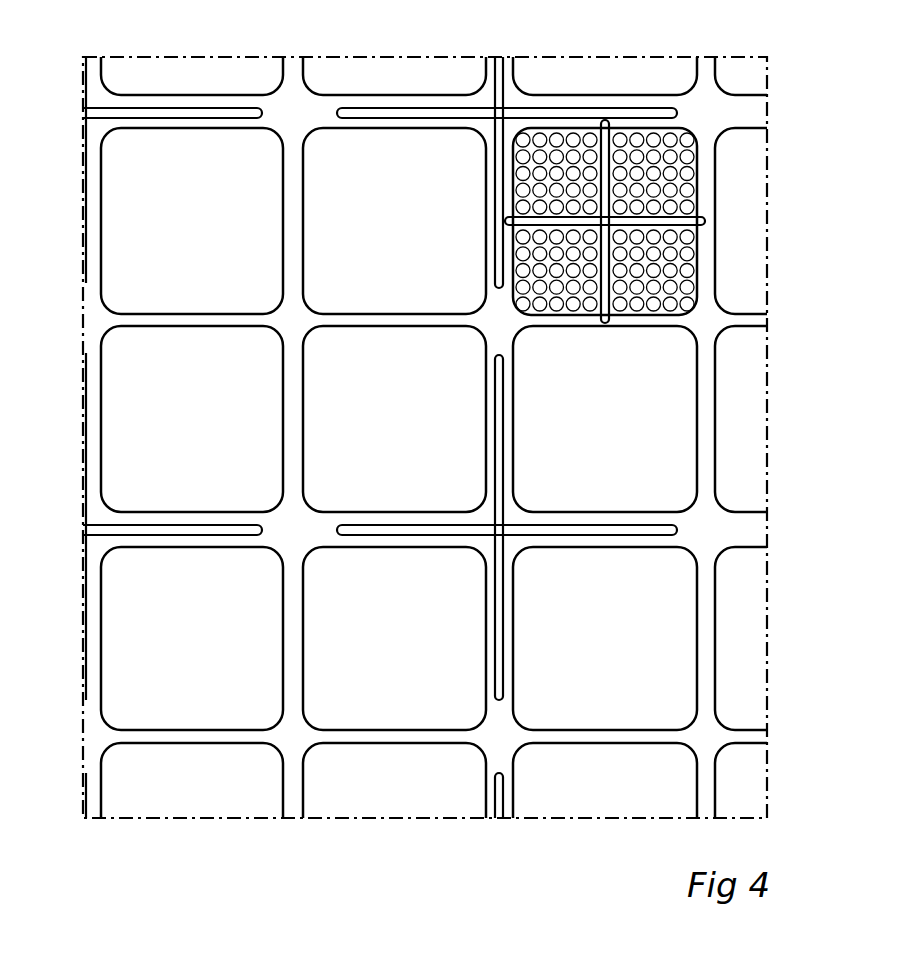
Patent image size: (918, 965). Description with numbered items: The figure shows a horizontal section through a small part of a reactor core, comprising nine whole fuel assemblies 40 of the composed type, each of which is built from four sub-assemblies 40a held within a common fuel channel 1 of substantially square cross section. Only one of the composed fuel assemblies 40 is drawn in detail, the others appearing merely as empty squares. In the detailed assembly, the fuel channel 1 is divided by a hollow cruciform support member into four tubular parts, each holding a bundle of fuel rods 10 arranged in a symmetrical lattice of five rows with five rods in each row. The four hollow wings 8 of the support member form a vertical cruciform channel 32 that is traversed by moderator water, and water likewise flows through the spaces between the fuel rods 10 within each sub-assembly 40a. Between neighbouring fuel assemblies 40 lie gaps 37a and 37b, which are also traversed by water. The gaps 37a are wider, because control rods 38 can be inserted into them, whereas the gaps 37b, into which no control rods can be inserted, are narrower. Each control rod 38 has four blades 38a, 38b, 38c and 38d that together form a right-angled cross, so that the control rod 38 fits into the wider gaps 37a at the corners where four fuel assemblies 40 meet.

The fuel channel 1 is at (670, 221).
The hollow wing 8 is at (683, 219).
The fuel rod 10 is at (675, 224).
The cruciform channel 32 is at (650, 200).
The gap 37a is at (510, 130).
The gap 37b is at (707, 273).
The control rod 38 is at (380, 527).
The blade 38a is at (503, 417).
The blade 38b is at (588, 525).
The blade 38c is at (503, 635).
The blade 38d is at (417, 533).
The composed fuel assembly 40 is at (213, 153).
The sub-assembly 40a is at (680, 295).